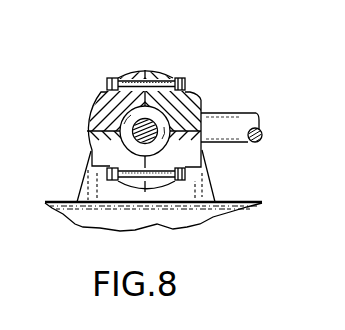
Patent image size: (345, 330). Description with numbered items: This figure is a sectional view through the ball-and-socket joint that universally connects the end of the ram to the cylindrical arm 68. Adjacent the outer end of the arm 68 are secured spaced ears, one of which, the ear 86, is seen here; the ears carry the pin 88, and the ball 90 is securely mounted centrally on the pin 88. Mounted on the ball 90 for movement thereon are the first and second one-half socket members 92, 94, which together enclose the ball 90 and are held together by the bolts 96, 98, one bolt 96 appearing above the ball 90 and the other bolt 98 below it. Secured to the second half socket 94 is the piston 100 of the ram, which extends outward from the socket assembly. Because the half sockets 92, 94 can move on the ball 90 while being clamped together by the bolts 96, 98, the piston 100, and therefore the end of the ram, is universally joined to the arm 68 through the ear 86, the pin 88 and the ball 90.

The cylindrical arm 68 is at (206, 217).
The spaced ear 86 is at (118, 183).
The pin 88 is at (90, 151).
The ball 90 is at (127, 126).
The first one-half socket member 92 is at (97, 98).
The second one-half socket member 94 is at (190, 97).
The bolt 96 is at (137, 75).
The bolt 98 is at (186, 172).
The piston 100 is at (238, 125).